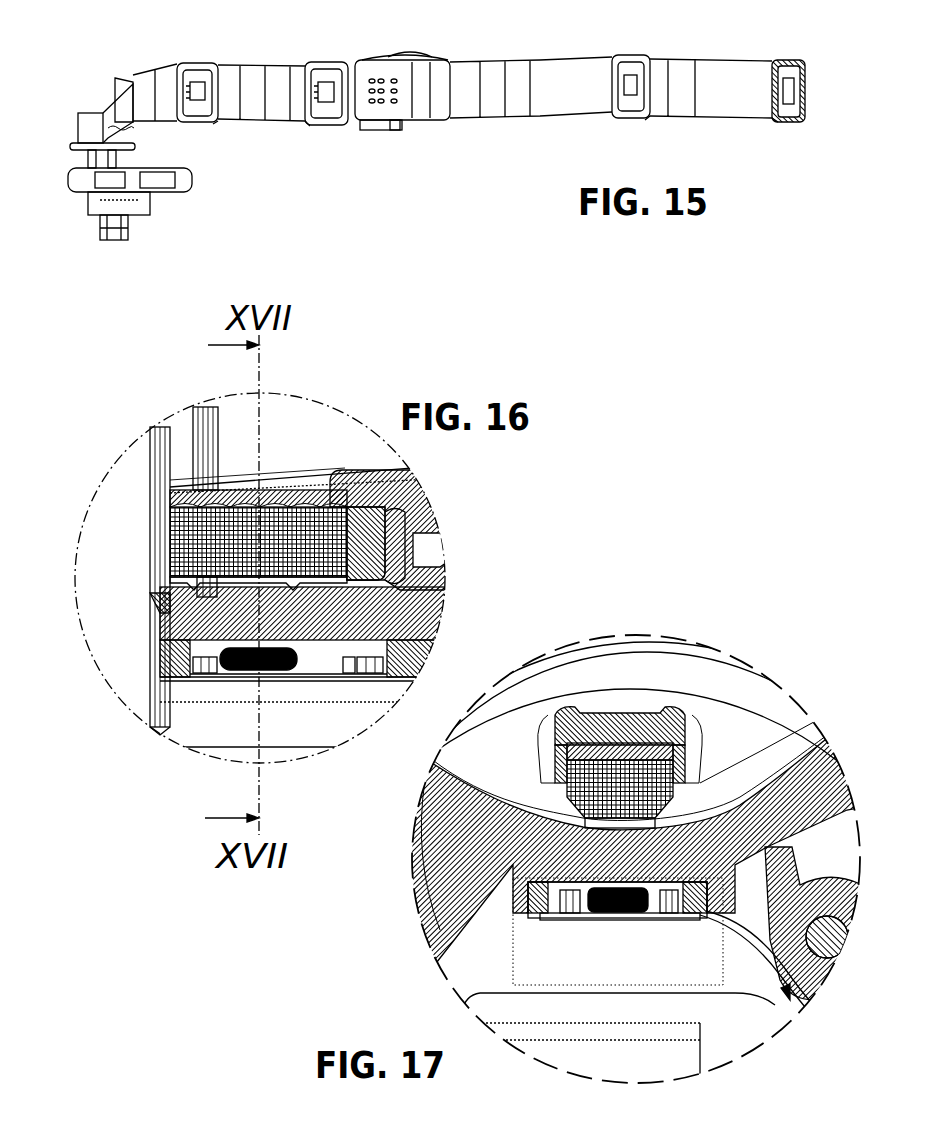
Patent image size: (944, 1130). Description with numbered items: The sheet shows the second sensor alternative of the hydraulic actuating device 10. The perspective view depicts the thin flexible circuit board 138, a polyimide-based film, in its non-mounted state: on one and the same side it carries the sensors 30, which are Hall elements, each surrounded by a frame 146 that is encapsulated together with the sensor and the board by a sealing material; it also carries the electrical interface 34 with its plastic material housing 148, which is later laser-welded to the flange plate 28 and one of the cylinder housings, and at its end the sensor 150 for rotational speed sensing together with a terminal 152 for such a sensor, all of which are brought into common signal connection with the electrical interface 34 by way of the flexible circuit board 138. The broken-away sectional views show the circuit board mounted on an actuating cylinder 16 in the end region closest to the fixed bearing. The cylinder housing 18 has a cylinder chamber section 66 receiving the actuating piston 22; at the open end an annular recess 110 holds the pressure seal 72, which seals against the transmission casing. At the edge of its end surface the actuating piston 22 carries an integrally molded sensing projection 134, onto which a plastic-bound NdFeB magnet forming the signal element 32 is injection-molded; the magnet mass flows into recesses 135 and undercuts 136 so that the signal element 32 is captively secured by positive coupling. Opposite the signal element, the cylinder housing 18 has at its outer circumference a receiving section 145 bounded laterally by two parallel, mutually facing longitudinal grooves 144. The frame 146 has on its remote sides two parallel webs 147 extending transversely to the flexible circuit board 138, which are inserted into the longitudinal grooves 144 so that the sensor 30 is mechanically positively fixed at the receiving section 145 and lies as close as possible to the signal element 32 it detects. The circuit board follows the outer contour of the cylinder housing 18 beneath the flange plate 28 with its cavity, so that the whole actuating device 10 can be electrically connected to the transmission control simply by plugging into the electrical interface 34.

In FIG. 16, the hydraulic actuating device 10 is at (472, 565).
In FIG. 17, the hydraulic actuating device 10 is at (472, 565).
In FIG. 16, the actuating cylinder 16 is at (446, 638).
In FIG. 17, the actuating cylinder 16 is at (824, 826).
In FIG. 16, the cylinder housing 18 is at (170, 623).
In FIG. 17, the cylinder housing 18 is at (429, 793).
In FIG. 16, the actuating piston 22 is at (353, 480).
In FIG. 17, the actuating piston 22 is at (749, 745).
In FIG. 17, the flange plate 28 is at (499, 958).
In FIG. 15, the sensor 30 is at (306, 82).
In FIG. 16, the sensor 30 is at (243, 671).
In FIG. 17, the sensor 30 is at (625, 918).
In FIG. 16, the signal element 32 is at (221, 530).
In FIG. 17, the signal element 32 is at (563, 770).
In FIG. 15, the electrical interface 34 is at (418, 53).
In FIG. 16, the cylinder chamber section 66 is at (291, 434).
In FIG. 17, the cylinder chamber section 66 is at (787, 783).
In FIG. 16, the pressure seal 72 is at (182, 434).
In FIG. 16, the annular recess 110 is at (170, 600).
In FIG. 16, the sensing projection 134 is at (170, 498).
In FIG. 17, the sensing projection 134 is at (606, 738).
In FIG. 16, the recess 135 is at (258, 492).
In FIG. 17, the undercut 136 is at (614, 750).
In FIG. 15, the flexible circuit board 138 is at (586, 95).
In FIG. 16, the flexible circuit board 138 is at (317, 685).
In FIG. 17, the flexible circuit board 138 is at (758, 975).
In FIG. 17, the longitudinal groove 144 is at (542, 906).
In FIG. 16, the receiving section 145 is at (343, 650).
In FIG. 17, the receiving section 145 is at (656, 912).
In FIG. 15, the frame 146 is at (318, 124).
In FIG. 16, the frame 146 is at (161, 680).
In FIG. 17, the frame 146 is at (613, 936).
In FIG. 17, the web 147 is at (530, 900).
In FIG. 15, the plastic material housing 148 is at (428, 58).
In FIG. 15, the sensor 150 is at (158, 190).
In FIG. 15, the terminal 152 is at (102, 232).